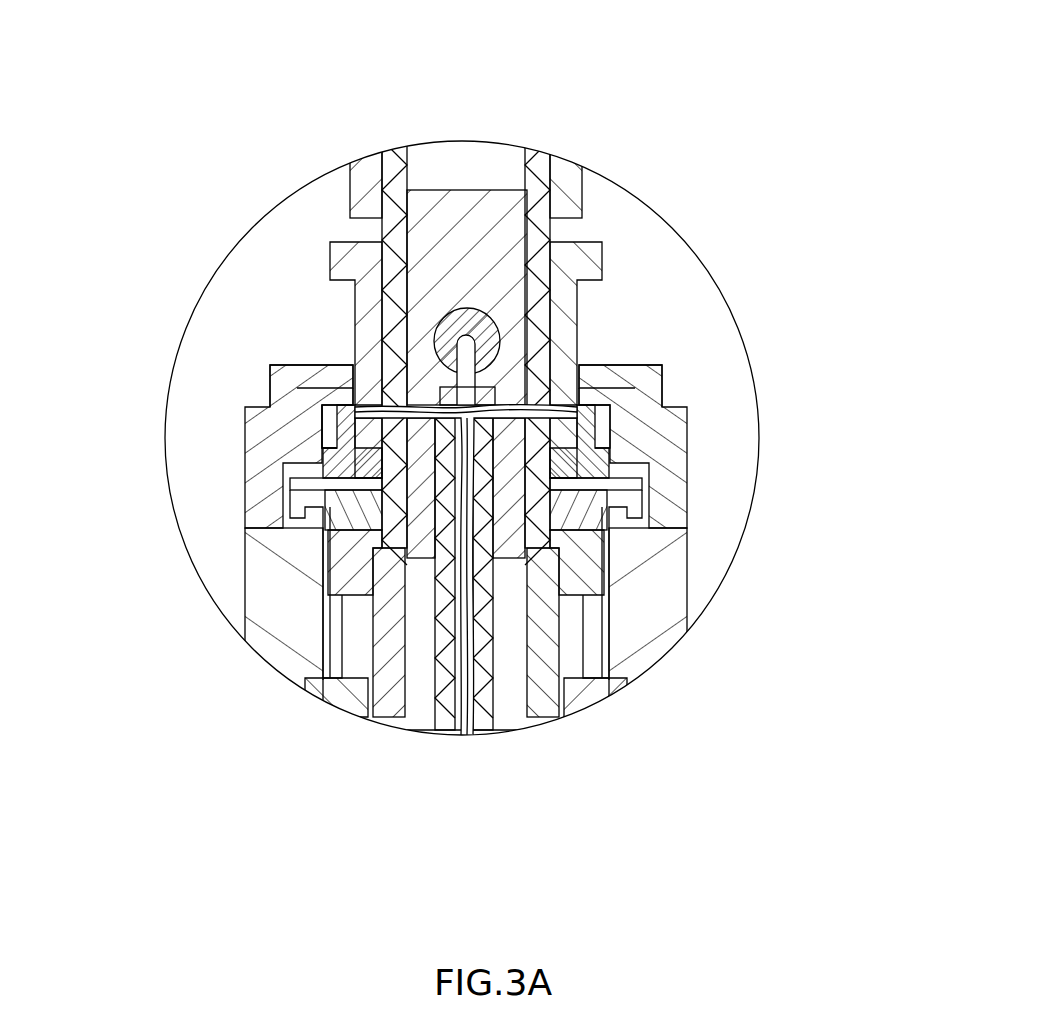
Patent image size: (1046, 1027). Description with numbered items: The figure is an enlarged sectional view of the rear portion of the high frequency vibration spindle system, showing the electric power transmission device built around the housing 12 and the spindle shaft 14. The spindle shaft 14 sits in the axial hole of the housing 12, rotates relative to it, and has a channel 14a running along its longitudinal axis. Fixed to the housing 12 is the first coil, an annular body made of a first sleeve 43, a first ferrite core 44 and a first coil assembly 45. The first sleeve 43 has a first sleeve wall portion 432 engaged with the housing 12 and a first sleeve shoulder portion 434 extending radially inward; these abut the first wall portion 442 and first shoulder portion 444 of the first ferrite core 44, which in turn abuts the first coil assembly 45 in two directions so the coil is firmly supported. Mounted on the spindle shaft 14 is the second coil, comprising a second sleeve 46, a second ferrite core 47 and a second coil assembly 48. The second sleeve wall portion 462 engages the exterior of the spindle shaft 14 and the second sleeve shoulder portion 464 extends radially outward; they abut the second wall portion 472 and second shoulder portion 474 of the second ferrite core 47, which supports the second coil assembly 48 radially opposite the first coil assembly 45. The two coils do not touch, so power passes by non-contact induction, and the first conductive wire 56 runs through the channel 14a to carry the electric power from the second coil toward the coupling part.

The housing 12 is at (283, 610).
The spindle shaft 14 is at (550, 688).
The channel 14a is at (500, 730).
The first sleeve 43 is at (197, 442).
The first sleeve wall portion 432 is at (265, 452).
The first sleeve shoulder portion 434 is at (283, 378).
The first ferrite core 44 is at (288, 248).
The first wall portion 442 is at (307, 405).
The first shoulder portion 444 is at (323, 408).
The first coil assembly 45 is at (340, 423).
The second sleeve 46 is at (582, 574).
The second sleeve wall portion 462 is at (655, 520).
The second sleeve shoulder portion 464 is at (640, 468).
The second ferrite core 47 is at (731, 418).
The second wall portion 472 is at (625, 400).
The second shoulder portion 474 is at (630, 445).
The second coil assembly 48 is at (588, 407).
The first conductive wire 56 is at (467, 606).